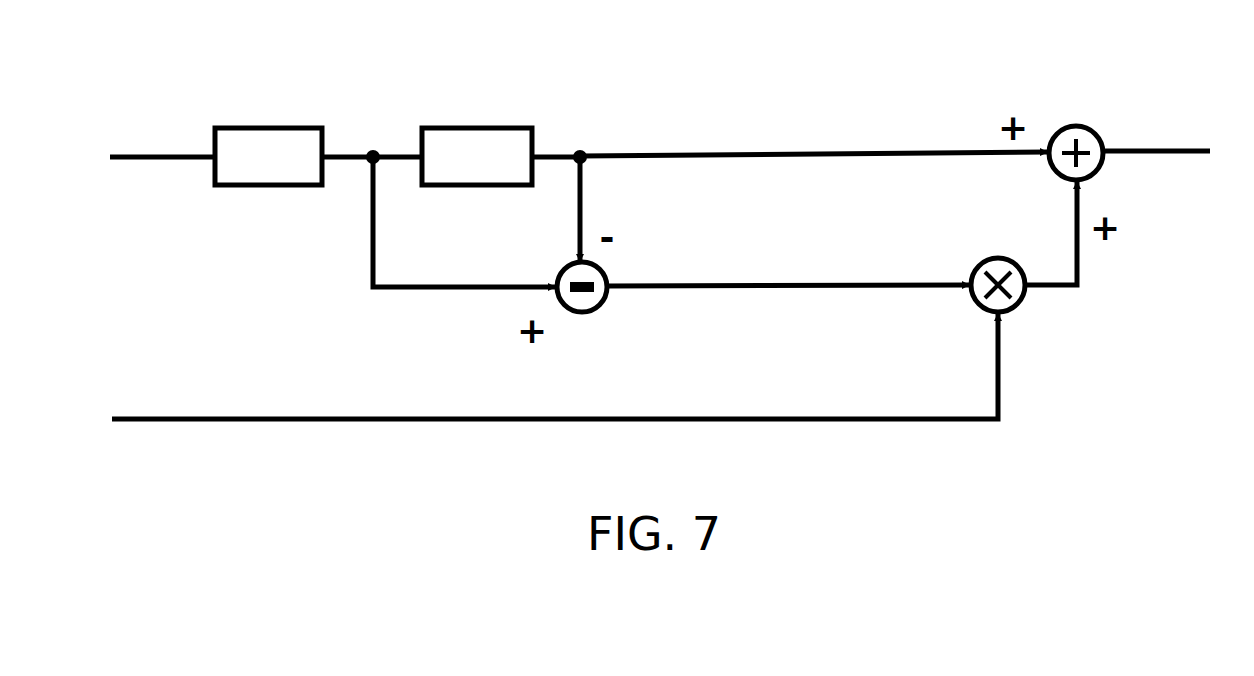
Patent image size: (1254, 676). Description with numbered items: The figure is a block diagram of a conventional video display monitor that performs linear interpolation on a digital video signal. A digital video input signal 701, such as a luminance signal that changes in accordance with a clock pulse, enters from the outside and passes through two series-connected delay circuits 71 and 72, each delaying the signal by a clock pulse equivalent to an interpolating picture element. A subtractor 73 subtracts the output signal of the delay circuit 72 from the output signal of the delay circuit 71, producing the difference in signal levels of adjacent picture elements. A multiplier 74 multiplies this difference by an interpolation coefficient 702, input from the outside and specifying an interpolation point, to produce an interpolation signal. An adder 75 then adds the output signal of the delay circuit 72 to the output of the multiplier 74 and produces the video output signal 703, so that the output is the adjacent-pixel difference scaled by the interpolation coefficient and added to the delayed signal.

The digital video input signal 701 is at (166, 156).
The interpolation coefficient 702 is at (166, 418).
The video output signal 703 is at (1155, 150).
The delay circuit 71 is at (279, 128).
The delay circuit 72 is at (478, 128).
The subtractor 73 is at (607, 270).
The multiplier 74 is at (989, 263).
The adder 75 is at (1075, 127).